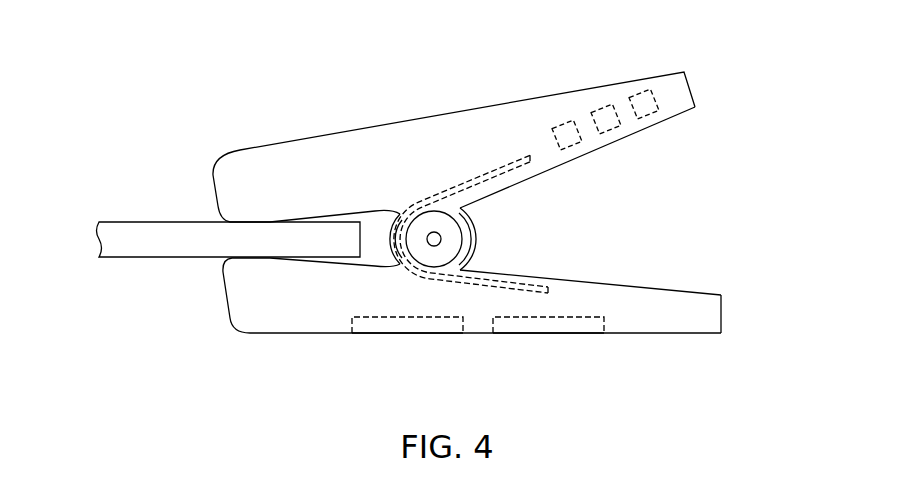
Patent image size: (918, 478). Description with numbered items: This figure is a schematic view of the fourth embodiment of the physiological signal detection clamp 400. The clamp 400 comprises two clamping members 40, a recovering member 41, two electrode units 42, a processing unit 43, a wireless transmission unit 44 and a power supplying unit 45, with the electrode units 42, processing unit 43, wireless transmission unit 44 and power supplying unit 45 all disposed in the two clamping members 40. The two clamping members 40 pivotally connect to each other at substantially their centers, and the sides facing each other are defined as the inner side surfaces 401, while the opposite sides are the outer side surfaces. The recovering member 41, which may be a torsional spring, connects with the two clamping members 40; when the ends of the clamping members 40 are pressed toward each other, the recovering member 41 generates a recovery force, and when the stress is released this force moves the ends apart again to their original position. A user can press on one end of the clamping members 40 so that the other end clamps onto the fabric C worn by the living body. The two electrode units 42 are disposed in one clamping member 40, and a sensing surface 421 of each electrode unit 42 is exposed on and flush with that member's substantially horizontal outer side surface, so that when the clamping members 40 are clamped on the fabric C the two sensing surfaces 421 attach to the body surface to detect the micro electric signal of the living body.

The physiological signal detection clamp 400 is at (328, 127).
The clamping member 40 is at (506, 202).
The inner side surface 401 is at (590, 282).
The recovering member 41 is at (477, 230).
The electrode unit 42 is at (403, 335).
The sensing surface 421 is at (448, 335).
The processing unit 43 is at (563, 130).
The wireless transmission unit 44 is at (602, 117).
The power supplying unit 45 is at (642, 103).
The fabric C is at (157, 243).